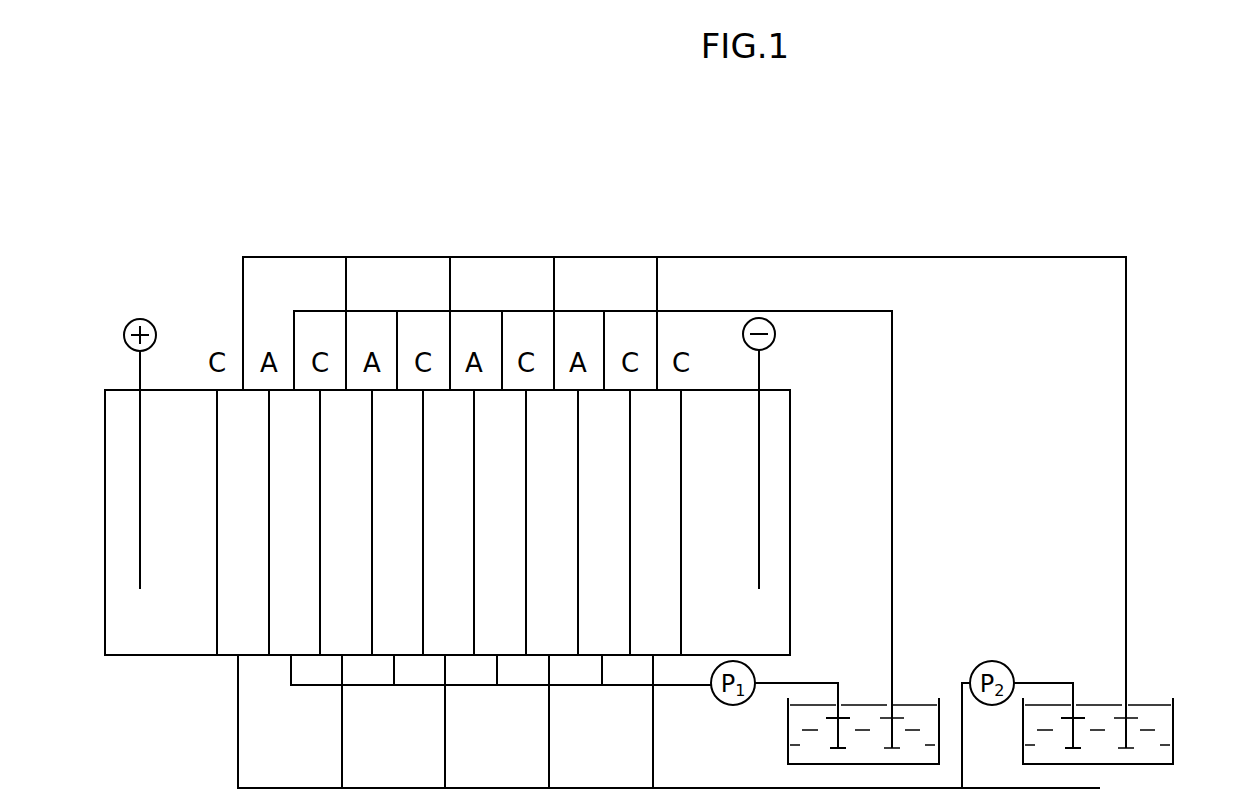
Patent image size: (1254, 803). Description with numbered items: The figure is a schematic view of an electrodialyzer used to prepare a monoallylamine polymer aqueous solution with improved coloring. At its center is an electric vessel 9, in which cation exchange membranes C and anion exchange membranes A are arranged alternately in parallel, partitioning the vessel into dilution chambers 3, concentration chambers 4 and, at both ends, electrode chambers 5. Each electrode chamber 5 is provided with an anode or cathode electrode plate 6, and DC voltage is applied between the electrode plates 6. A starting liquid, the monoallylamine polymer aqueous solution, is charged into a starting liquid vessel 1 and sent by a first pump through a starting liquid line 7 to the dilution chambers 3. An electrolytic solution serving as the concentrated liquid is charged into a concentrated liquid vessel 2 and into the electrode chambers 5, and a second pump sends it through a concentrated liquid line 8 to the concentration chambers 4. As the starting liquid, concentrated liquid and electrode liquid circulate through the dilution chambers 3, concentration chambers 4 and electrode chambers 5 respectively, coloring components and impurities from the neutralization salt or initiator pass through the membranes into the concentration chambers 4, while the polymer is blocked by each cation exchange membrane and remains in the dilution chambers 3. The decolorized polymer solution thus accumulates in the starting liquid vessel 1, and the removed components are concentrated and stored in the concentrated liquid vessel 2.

The starting liquid vessel 1 is at (788, 740).
The concentrated liquid vessel 2 is at (1175, 730).
The dilution chamber 3 is at (449, 522).
The concentration chamber 4 is at (449, 522).
The electrode chamber 5 is at (448, 522).
The electrode plate 6 is at (150, 320).
The starting liquid line 7 is at (892, 473).
The concentrated liquid line 8 is at (1126, 465).
The electric vessel 9 is at (105, 483).